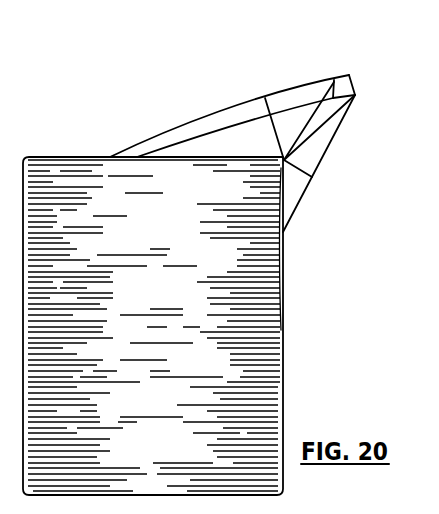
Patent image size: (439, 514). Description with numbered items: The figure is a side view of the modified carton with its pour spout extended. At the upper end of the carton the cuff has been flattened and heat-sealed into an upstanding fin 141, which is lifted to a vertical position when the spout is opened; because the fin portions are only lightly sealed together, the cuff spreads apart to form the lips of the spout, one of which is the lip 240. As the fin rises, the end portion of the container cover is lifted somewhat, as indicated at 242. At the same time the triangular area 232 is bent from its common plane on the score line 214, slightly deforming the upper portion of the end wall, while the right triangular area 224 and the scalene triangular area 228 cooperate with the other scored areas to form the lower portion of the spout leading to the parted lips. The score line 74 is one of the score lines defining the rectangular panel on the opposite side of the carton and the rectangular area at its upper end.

The fin 141 is at (205, 122).
The lifted end portion of container cover 242 is at (245, 133).
The right triangular area 224 is at (297, 123).
The lip of pour spout 240 is at (343, 87).
The scalene triangular area 228 is at (331, 110).
The score line 214 is at (333, 142).
The score line 74 is at (303, 168).
The triangular area 232 is at (293, 190).